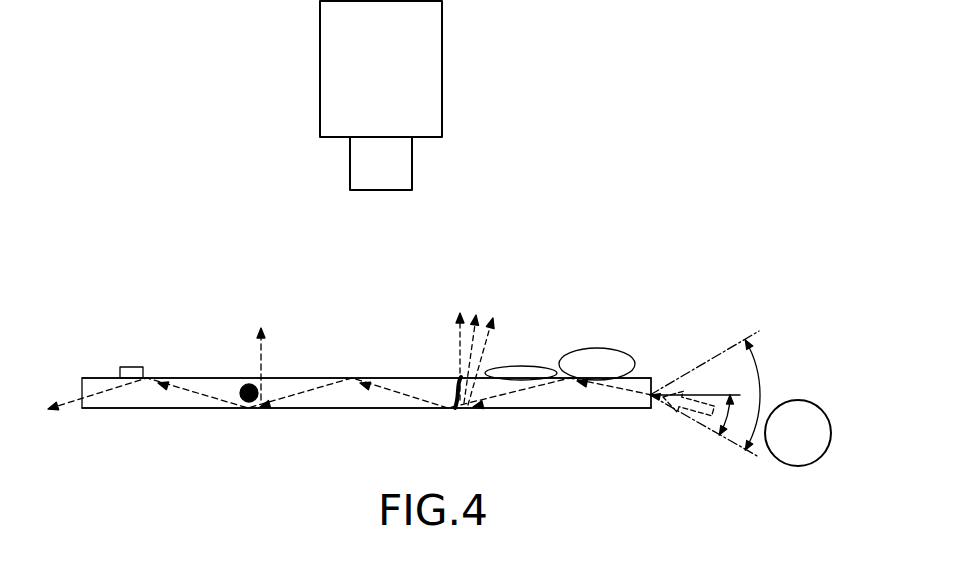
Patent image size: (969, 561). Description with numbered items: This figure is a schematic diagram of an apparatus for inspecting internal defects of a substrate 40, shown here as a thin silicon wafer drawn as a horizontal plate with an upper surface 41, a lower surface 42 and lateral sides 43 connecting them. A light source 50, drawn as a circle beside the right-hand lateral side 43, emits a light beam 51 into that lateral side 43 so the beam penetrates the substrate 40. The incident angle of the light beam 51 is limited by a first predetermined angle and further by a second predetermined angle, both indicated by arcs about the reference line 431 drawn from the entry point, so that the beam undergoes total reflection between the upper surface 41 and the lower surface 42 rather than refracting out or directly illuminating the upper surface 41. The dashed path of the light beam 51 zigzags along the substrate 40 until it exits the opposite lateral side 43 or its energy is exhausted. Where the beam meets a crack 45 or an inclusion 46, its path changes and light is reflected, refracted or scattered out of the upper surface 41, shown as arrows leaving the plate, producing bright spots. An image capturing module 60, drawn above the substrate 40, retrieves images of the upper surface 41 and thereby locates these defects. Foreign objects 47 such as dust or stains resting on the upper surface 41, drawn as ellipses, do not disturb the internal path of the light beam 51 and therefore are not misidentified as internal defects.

The substrate 40 is at (339, 414).
The upper surface 41 is at (638, 370).
The lower surface 42 is at (604, 410).
The lateral side 43 is at (656, 398).
The normal of light incident surface 431 is at (715, 393).
The crack 45 is at (457, 390).
The inclusion 46 is at (249, 384).
The foreign object 47 is at (520, 371).
The light source 50 is at (800, 407).
The light beam 51 is at (702, 387).
The image capturing module 60 is at (429, 73).